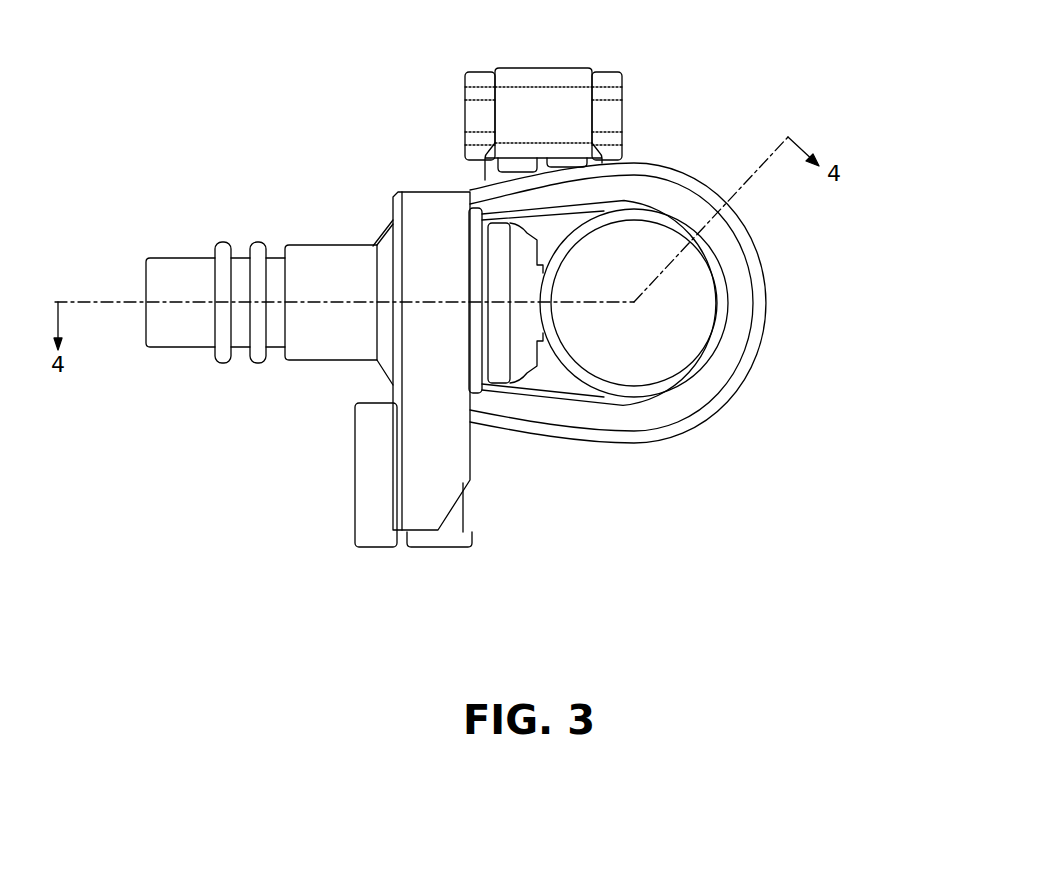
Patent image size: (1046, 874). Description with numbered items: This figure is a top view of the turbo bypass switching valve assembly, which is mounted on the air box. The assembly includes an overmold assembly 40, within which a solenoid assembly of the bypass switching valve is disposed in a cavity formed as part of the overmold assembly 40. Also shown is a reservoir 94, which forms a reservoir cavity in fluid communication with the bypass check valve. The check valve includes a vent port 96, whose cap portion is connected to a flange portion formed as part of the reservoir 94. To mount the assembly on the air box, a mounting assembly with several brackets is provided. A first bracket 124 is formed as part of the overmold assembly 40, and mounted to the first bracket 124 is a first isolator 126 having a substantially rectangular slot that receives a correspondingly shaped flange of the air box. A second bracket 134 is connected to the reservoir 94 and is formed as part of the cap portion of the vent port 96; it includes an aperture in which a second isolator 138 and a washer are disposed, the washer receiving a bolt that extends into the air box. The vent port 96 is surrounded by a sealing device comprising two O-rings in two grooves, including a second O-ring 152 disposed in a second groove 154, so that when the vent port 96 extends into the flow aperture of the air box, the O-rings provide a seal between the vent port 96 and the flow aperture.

The overmold assembly 40 is at (743, 373).
The reservoir 94 is at (730, 312).
The vent port 96 is at (178, 274).
The first bracket 124 is at (523, 95).
The first isolator 126 is at (613, 110).
The second bracket 134 is at (425, 388).
The second isolator 138 is at (373, 535).
The second O-ring 152 is at (278, 272).
The second groove 154 is at (238, 270).